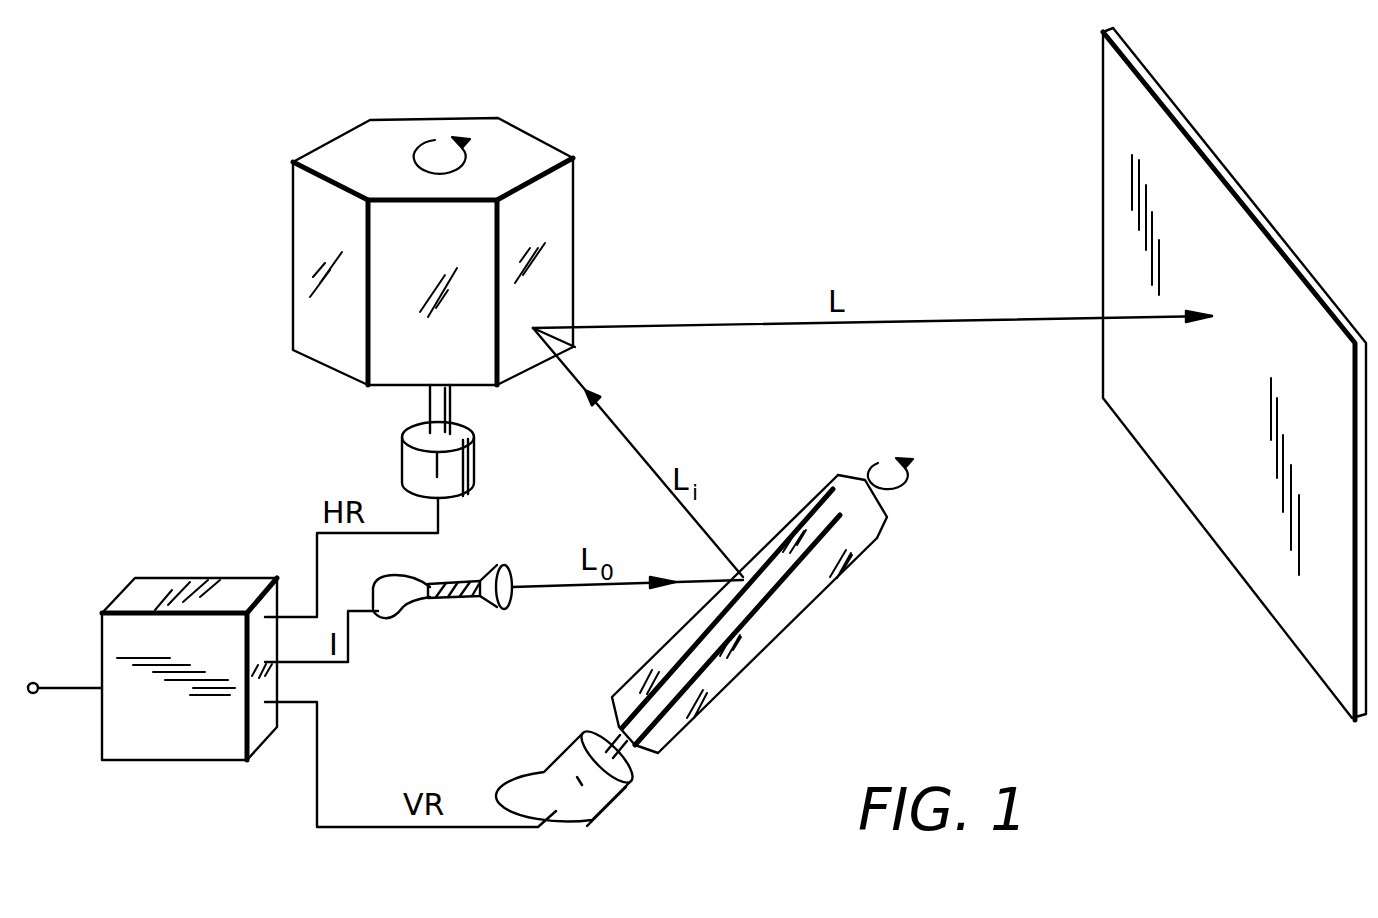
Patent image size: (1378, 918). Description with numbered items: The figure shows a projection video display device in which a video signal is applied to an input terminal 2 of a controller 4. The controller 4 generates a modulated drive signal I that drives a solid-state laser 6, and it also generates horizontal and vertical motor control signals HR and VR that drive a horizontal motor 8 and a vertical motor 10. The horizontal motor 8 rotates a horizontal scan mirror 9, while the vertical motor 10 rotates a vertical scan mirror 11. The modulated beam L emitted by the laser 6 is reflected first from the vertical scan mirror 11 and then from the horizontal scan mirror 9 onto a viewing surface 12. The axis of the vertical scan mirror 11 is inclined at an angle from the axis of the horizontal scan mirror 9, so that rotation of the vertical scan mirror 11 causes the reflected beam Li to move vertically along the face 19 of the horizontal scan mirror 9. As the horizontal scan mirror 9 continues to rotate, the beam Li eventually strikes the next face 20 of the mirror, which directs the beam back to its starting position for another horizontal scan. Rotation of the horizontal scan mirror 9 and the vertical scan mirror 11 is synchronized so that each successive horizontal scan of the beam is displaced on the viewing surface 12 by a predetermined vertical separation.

The input terminal 2 is at (36, 683).
The controller 4 is at (158, 745).
The solid-state laser 6 is at (506, 612).
The horizontal motor 8 is at (475, 453).
The horizontal scan mirror 9 is at (540, 138).
The vertical motor 10 is at (617, 793).
The vertical scan mirror 11 is at (884, 516).
The viewing surface 12 is at (1183, 110).
The face of the horizontal mirror 19 is at (565, 213).
The next face of the mirror 20 is at (388, 330).